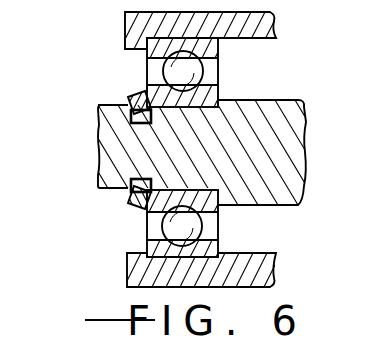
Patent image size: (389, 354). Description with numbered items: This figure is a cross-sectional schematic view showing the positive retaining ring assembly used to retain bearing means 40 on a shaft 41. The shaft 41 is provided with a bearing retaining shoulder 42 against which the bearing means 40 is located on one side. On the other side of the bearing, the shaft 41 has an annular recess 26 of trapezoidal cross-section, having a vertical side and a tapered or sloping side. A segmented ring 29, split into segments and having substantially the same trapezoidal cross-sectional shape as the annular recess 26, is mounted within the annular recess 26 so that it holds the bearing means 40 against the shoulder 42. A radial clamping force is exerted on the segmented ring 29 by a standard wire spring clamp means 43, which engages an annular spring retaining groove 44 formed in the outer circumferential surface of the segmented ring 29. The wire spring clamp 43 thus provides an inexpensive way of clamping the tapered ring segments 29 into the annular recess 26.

The bearing means 40 is at (231, 50).
The shaft 41 is at (283, 100).
The bearing retaining shoulder 42 is at (218, 105).
The wire spring clamp means 43 is at (132, 95).
The annular spring retaining groove 44 is at (130, 110).
The annular recess 26 is at (143, 122).
The segmented ring 29 is at (129, 193).